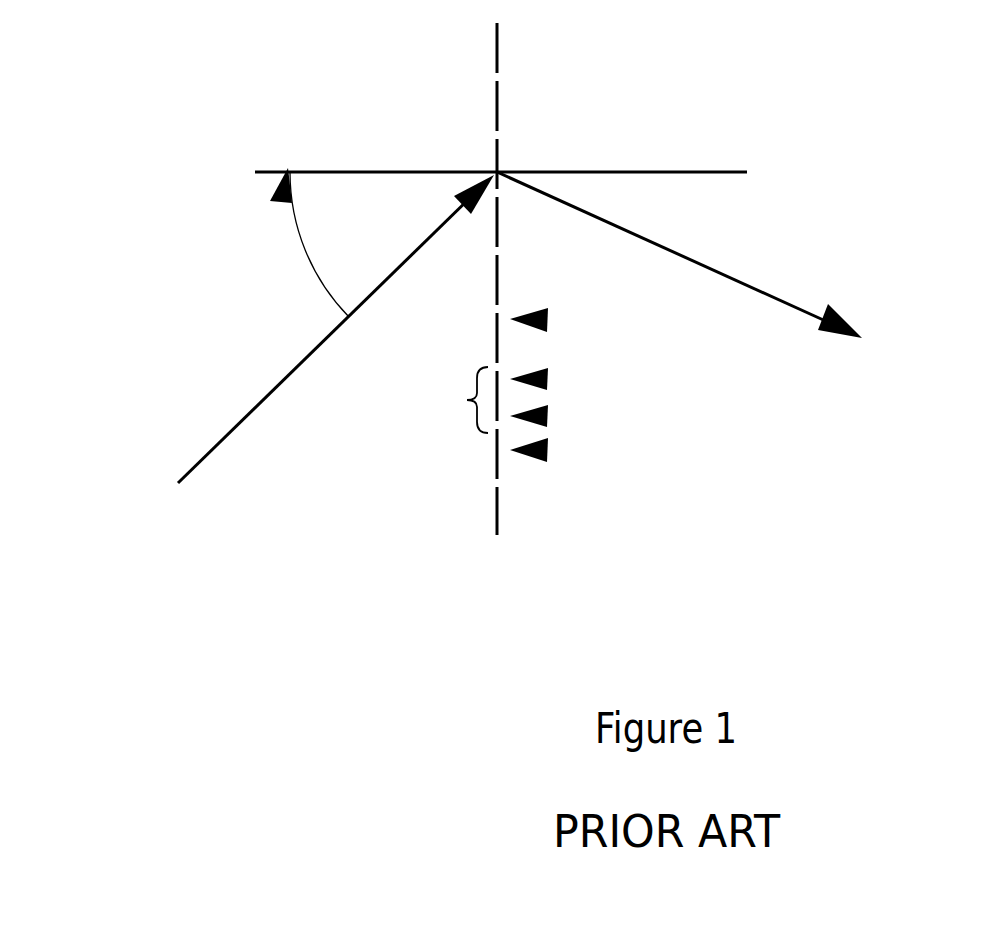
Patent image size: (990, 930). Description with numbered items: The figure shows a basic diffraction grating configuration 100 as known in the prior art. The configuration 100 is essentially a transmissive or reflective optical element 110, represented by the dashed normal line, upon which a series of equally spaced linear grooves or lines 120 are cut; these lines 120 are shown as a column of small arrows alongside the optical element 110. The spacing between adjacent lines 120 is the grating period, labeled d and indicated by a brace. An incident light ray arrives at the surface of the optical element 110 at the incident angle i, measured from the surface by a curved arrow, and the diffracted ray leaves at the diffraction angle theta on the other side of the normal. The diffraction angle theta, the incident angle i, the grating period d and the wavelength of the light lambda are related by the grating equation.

The diffraction grating configuration 100 is at (545, 271).
The optical element 110 is at (497, 88).
The grooves or lines 120 is at (548, 328).